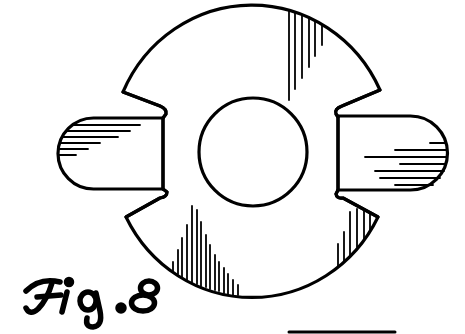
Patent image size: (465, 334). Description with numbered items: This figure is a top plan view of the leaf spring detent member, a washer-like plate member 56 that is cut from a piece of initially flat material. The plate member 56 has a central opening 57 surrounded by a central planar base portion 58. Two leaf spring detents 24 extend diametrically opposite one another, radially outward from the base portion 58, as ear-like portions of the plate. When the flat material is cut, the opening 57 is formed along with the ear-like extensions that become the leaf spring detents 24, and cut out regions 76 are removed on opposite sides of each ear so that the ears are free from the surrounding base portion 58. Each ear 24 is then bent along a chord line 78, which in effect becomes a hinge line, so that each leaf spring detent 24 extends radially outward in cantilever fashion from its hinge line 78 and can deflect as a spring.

The leaf spring detent 24 is at (73, 133).
The plate member 56 is at (357, 257).
The central opening 57 is at (247, 137).
The central planar base portion 58 is at (342, 70).
The cut out region 76 is at (125, 91).
The chord line 78 is at (165, 145).